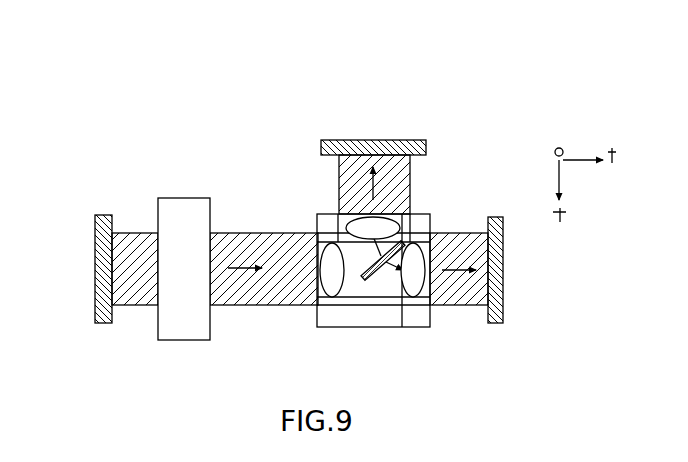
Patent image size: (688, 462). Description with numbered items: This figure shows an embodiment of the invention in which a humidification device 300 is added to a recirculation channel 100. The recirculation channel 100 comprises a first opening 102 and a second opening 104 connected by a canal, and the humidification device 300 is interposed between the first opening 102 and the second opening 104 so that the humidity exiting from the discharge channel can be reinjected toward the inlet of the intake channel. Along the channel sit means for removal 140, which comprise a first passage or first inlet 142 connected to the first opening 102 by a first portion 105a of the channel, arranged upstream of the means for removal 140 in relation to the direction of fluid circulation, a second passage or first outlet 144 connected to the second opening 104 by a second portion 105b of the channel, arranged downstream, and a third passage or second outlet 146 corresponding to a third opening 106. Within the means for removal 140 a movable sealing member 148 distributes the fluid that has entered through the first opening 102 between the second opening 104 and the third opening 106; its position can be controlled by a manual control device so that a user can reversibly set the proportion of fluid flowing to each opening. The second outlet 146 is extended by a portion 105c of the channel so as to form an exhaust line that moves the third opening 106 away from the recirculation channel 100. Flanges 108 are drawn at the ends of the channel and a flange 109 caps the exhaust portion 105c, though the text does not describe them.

The recirculation channel 100 is at (168, 198).
The first opening 102 is at (90, 266).
The second opening 104 is at (508, 268).
The first portion of the channel 105a is at (240, 306).
The second portion of the channel 105b is at (455, 234).
The portion of a channel 105c is at (338, 178).
The third opening 106 is at (373, 137).
The flange 108 is at (97, 325).
The top flange 109 is at (428, 149).
The means for removal 140 is at (370, 316).
The first inlet 142 is at (342, 292).
The first outlet 144 is at (404, 300).
The second outlet 146 is at (355, 220).
The movable sealing member 148 is at (405, 240).
The humidification device 300 is at (198, 271).